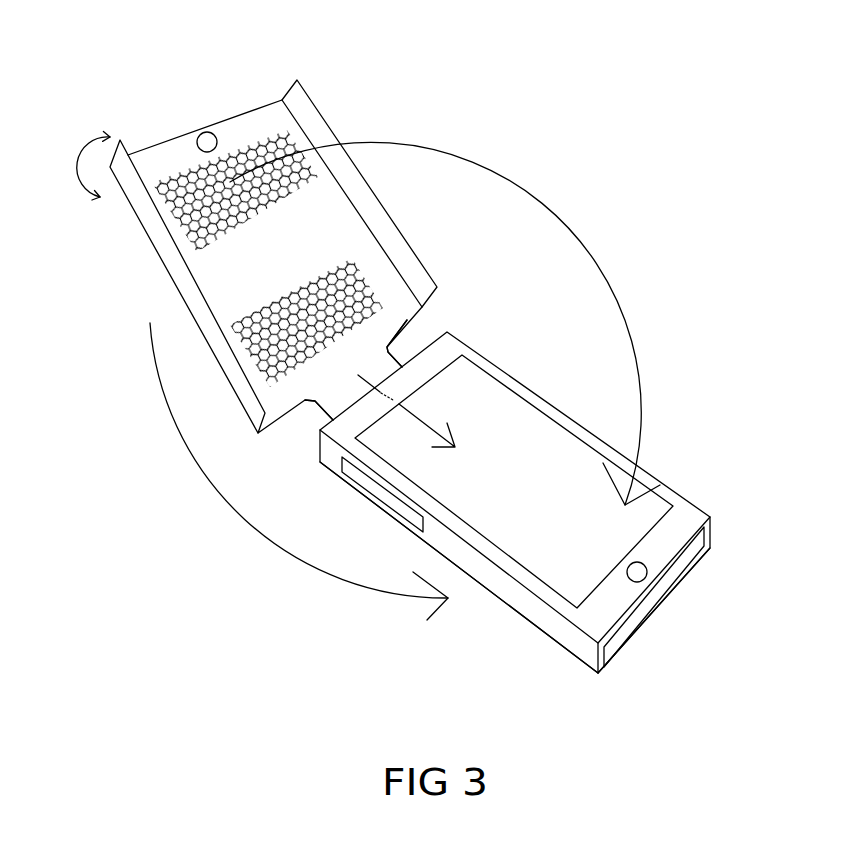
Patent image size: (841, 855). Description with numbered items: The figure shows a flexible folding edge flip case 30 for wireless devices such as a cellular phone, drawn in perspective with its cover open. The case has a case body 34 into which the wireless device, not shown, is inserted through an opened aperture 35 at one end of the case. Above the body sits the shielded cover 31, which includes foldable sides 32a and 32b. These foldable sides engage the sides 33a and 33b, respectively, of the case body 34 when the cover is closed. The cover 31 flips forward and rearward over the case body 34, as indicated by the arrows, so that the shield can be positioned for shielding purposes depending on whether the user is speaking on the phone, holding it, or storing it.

The flexible folding edge flip case 30 is at (556, 349).
The cover 31 is at (243, 117).
The foldable side 32a is at (145, 210).
The foldable side 32b is at (312, 120).
The side of the case body 33a is at (533, 612).
The side of the case body 33b is at (688, 500).
The case body 34 is at (605, 607).
The opened aperture 35 is at (342, 408).